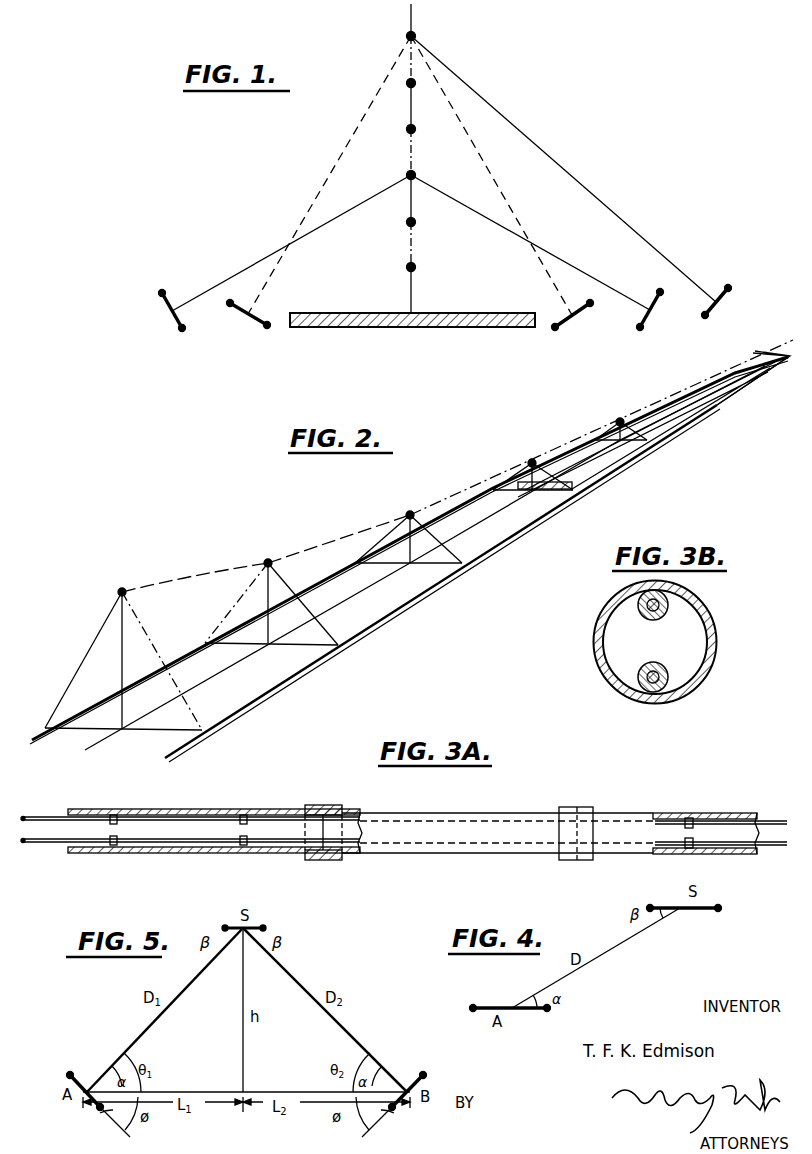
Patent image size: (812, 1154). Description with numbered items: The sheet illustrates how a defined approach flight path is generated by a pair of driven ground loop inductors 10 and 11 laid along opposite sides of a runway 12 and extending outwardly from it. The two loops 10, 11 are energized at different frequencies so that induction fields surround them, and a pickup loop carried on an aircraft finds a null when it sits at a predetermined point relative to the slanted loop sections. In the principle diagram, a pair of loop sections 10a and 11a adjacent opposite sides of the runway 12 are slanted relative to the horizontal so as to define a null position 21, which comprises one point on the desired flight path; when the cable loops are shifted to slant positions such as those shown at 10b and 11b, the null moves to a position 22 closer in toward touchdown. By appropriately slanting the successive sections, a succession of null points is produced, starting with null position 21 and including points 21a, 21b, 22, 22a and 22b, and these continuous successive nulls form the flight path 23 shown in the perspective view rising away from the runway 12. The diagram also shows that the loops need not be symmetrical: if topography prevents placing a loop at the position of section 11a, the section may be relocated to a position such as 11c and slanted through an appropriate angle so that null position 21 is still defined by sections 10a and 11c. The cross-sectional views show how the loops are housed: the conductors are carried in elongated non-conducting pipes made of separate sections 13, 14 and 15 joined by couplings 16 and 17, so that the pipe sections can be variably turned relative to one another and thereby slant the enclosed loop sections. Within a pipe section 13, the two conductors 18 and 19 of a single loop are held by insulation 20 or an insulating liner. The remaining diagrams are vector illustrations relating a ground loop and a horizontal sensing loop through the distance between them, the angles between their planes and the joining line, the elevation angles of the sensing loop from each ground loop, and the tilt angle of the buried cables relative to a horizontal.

In FIG. 2, the loop 10 is at (377, 622).
In FIG. 1, the loop section 10a is at (250, 330).
In FIG. 1, the loop section 10b is at (167, 323).
In FIG. 2, the loop 11 is at (238, 625).
In FIG. 1, the loop section 11a is at (573, 317).
In FIG. 1, the loop section 11b is at (648, 318).
In FIG. 1, the loop section 11c is at (715, 308).
In FIG. 1, the runway 12 is at (357, 327).
In FIG. 2, the runway 12 is at (598, 460).
In FIG. 3B, the pipe section 13 is at (712, 618).
In FIG. 3A, the pipe section 13 is at (183, 808).
In FIG. 3A, the pipe section 14 is at (480, 818).
In FIG. 3A, the pipe section 15 is at (645, 812).
In FIG. 3A, the coupling 16 is at (335, 805).
In FIG. 3A, the coupling 17 is at (570, 810).
In FIG. 3B, the conductor 18 is at (642, 618).
In FIG. 3A, the conductor 18 is at (40, 810).
In FIG. 3B, the conductor 19 is at (660, 670).
In FIG. 3A, the conductor 19 is at (58, 843).
In FIG. 3B, the insulation 20 is at (655, 621).
In FIG. 1, the null position 21 is at (418, 35).
In FIG. 2, the null position 21 is at (122, 592).
In FIG. 1, the null point 21a is at (411, 83).
In FIG. 2, the null point 21a is at (268, 563).
In FIG. 1, the null point 21b is at (411, 129).
In FIG. 2, the null point 21b is at (410, 515).
In FIG. 1, the null position 22 is at (411, 175).
In FIG. 2, the null position 22 is at (532, 463).
In FIG. 1, the null point 22a is at (411, 222).
In FIG. 2, the null point 22a is at (620, 422).
In FIG. 1, the null point 22b is at (411, 267).
In FIG. 2, the flight path 23 is at (200, 580).